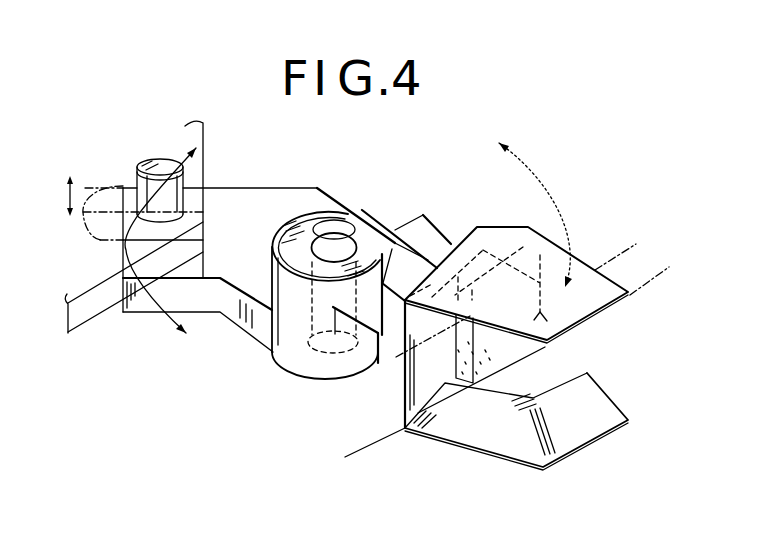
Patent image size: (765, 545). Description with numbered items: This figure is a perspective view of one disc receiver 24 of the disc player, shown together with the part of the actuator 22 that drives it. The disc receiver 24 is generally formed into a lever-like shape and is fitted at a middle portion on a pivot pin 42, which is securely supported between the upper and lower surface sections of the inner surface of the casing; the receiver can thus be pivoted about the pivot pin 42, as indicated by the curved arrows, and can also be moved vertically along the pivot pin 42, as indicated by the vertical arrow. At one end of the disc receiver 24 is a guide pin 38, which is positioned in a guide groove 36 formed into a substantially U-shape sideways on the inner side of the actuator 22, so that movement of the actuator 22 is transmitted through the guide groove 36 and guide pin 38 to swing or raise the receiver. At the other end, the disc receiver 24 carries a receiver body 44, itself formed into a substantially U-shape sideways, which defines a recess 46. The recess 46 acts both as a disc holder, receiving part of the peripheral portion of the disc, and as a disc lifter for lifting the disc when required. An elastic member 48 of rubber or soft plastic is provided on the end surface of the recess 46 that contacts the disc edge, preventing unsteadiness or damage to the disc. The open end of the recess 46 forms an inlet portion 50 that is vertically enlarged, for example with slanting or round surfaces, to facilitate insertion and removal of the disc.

The actuator 22 is at (97, 320).
The disc receiver 24 is at (258, 186).
The guide groove 36 is at (100, 208).
The guide pin 38 is at (156, 160).
The pivot pin 42 is at (362, 216).
The receiver body 44 is at (397, 387).
The recess 46 is at (612, 353).
The elastic member 48 is at (508, 356).
The inlet portion 50 is at (567, 447).